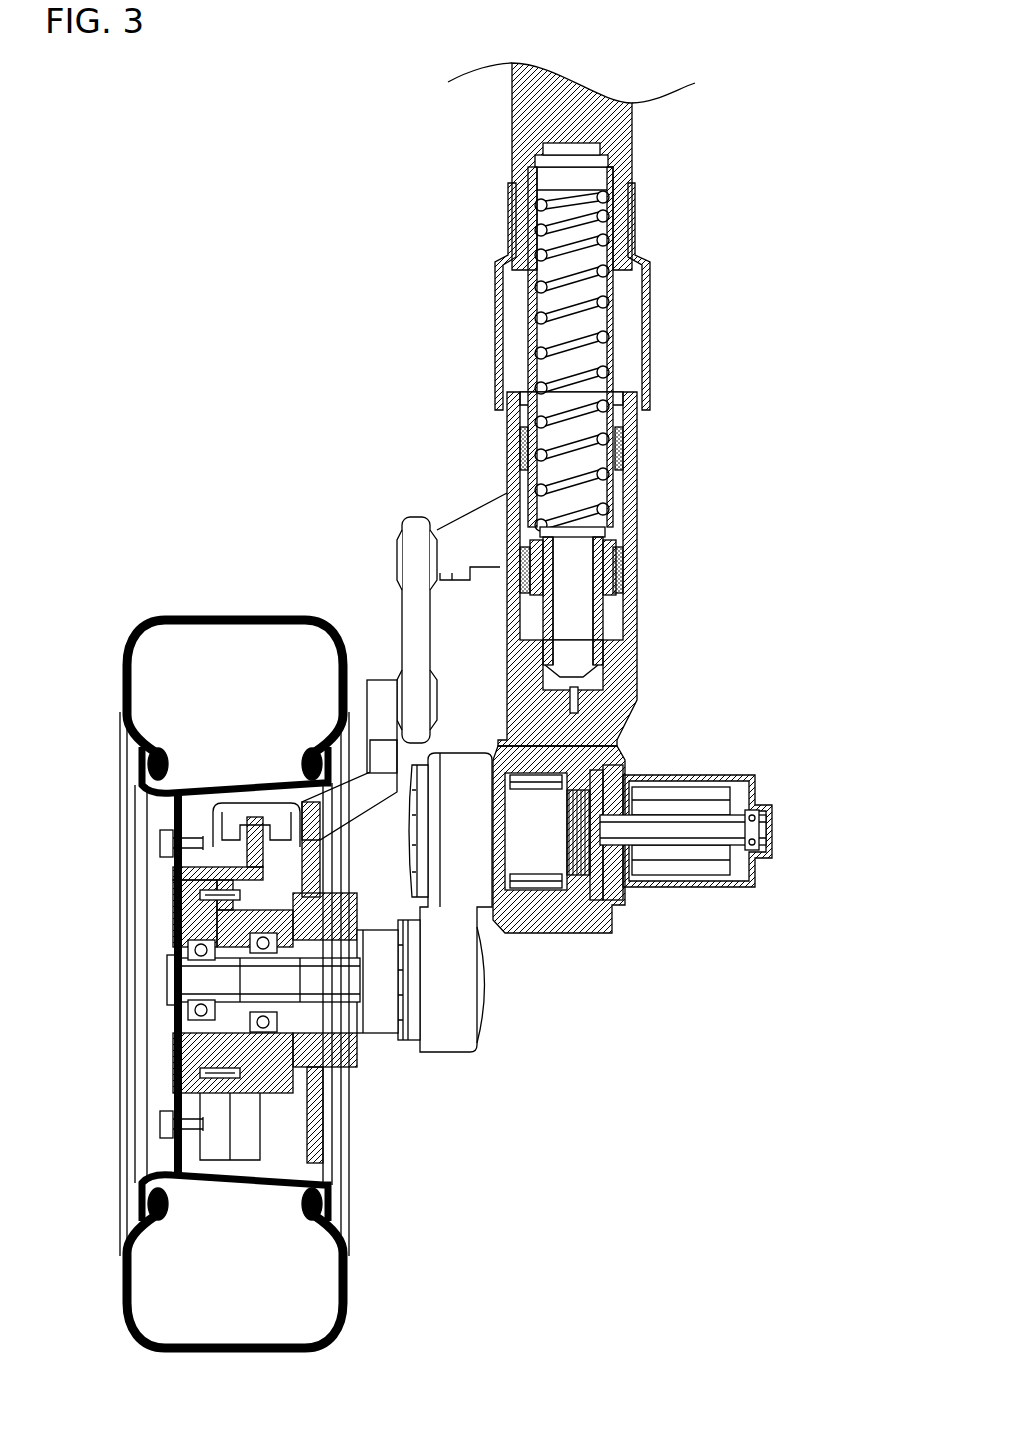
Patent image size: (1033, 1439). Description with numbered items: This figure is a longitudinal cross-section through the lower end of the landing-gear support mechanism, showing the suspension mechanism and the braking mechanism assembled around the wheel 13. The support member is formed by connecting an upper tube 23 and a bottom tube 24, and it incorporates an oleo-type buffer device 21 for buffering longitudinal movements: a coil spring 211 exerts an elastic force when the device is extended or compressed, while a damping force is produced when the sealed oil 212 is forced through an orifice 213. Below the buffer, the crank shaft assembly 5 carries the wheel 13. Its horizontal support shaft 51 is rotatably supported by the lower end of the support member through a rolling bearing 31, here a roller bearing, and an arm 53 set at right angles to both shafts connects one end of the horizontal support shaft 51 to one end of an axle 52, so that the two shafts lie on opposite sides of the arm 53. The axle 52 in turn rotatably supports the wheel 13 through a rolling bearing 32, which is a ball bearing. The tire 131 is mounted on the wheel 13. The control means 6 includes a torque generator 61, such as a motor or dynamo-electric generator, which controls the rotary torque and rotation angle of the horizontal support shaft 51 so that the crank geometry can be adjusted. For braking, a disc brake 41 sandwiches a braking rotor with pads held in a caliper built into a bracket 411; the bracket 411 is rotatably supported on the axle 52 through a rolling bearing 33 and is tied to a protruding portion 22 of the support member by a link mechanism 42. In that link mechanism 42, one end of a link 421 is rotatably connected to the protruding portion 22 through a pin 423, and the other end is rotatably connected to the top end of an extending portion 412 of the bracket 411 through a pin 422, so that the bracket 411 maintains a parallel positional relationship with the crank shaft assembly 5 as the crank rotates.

The wheel 13 is at (192, 929).
The tire 131 is at (242, 612).
The oleo-type buffer device 21 is at (628, 358).
The coil spring 211 is at (630, 472).
The sealed oil 212 is at (622, 528).
The orifice 213 is at (622, 573).
The protruding portion 22 is at (478, 523).
The upper tube 23 is at (632, 143).
The bottom tube 24 is at (628, 515).
The rolling bearing 31 is at (580, 873).
The rolling bearing 32 is at (200, 1010).
The rolling bearing 33 is at (343, 1063).
The disc brake 41 is at (471, 868).
The bracket 411 is at (355, 1062).
The extending portion 412 is at (383, 697).
The link mechanism 42 is at (396, 583).
The link 421 is at (412, 607).
The pin 422 is at (394, 548).
The pin 423 is at (437, 708).
The crank shaft assembly 5 is at (525, 906).
The horizontal support shaft 51 is at (540, 845).
The axle 52 is at (363, 1027).
The arm 53 is at (490, 963).
The control means 6 is at (698, 767).
The torque generator 61 is at (710, 775).